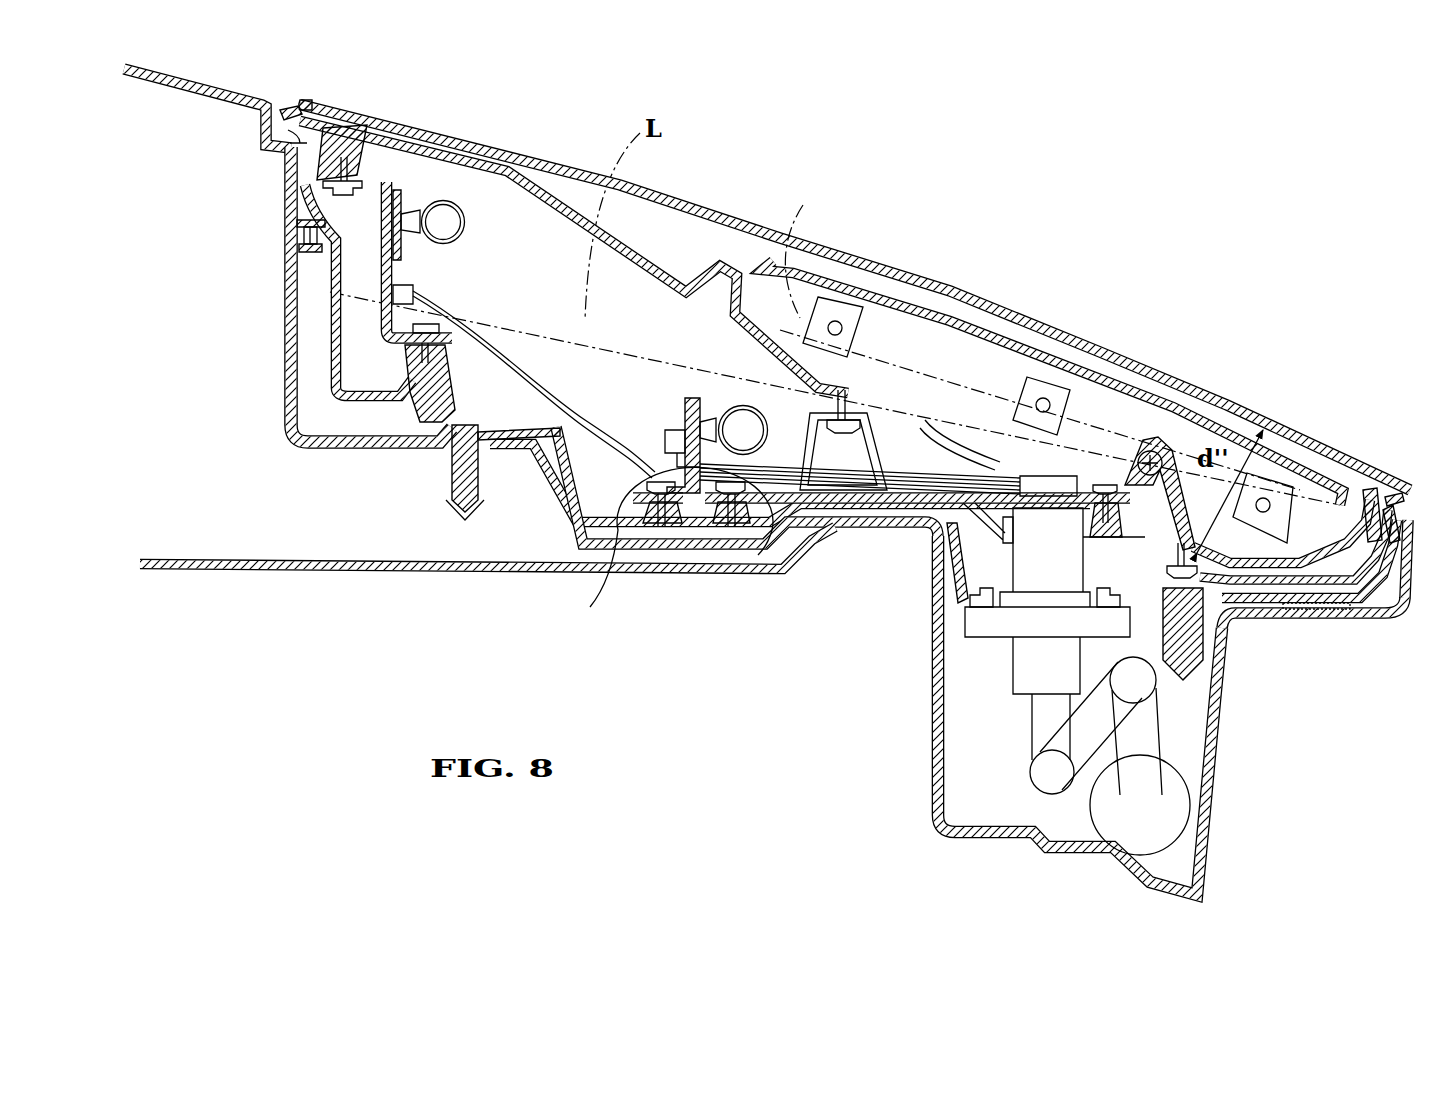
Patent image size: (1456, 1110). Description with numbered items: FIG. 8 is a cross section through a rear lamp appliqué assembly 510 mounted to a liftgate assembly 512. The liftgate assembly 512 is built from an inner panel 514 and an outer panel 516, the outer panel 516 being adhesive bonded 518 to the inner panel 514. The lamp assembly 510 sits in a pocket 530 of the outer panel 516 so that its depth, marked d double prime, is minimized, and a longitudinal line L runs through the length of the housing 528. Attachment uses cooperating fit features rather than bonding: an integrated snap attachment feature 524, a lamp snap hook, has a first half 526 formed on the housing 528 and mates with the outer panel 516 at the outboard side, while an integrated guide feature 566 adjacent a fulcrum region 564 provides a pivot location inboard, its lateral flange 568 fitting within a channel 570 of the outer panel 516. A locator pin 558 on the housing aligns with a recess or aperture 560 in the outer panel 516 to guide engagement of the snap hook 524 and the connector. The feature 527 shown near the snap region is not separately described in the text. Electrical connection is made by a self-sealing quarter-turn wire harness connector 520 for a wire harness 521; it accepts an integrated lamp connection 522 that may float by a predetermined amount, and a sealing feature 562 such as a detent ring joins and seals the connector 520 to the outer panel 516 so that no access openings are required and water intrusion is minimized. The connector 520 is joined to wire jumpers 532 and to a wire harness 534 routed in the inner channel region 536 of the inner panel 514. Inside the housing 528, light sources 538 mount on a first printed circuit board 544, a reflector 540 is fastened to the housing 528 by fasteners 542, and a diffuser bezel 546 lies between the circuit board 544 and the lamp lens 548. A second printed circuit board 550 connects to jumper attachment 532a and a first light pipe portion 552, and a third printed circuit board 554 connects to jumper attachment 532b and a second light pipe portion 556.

The rear lamp appliqué assembly 510 is at (1150, 315).
The liftgate assembly 512 is at (1238, 843).
The inner panel 514 is at (1220, 735).
The outer panel 516 is at (286, 355).
The adhesive bond 518 is at (1320, 610).
The self-sealing connector 520 is at (985, 650).
The wire harness 521 is at (1030, 740).
The integrated lamp connection 522 is at (1090, 590).
The integrated snap attachment feature 524 is at (1395, 585).
The first half of integrated snap feature 526 is at (1374, 482).
The tab 527 is at (1403, 522).
The housing 528 is at (560, 440).
The pocket 530 is at (1408, 508).
The wire jumpers 532 is at (700, 412).
The wire jumper attachment 532a is at (425, 297).
The wire jumper attachment 532b is at (654, 547).
The wire harness 534 is at (1092, 820).
The liftgate inner channel region 536 is at (990, 705).
The light source 538 is at (838, 322).
The reflector 540 is at (655, 258).
The fasteners 542 is at (343, 198).
The first printed circuit board 544 is at (803, 228).
The diffuser bezel 546 is at (930, 305).
The lamp lens 548 is at (1040, 318).
The second printed circuit board 550 is at (425, 280).
The first light pipe portion 552 is at (458, 204).
The third printed circuit board 554 is at (805, 420).
The second light pipe portion 556 is at (800, 545).
The fastener post 558 is at (455, 500).
The recess or aperture 560 is at (492, 470).
The sealing feature 562 is at (965, 600).
The fulcrum region 564 is at (280, 95).
The integrated guide feature 566 is at (290, 240).
The lateral flange 568 is at (315, 233).
The channel 570 is at (345, 175).